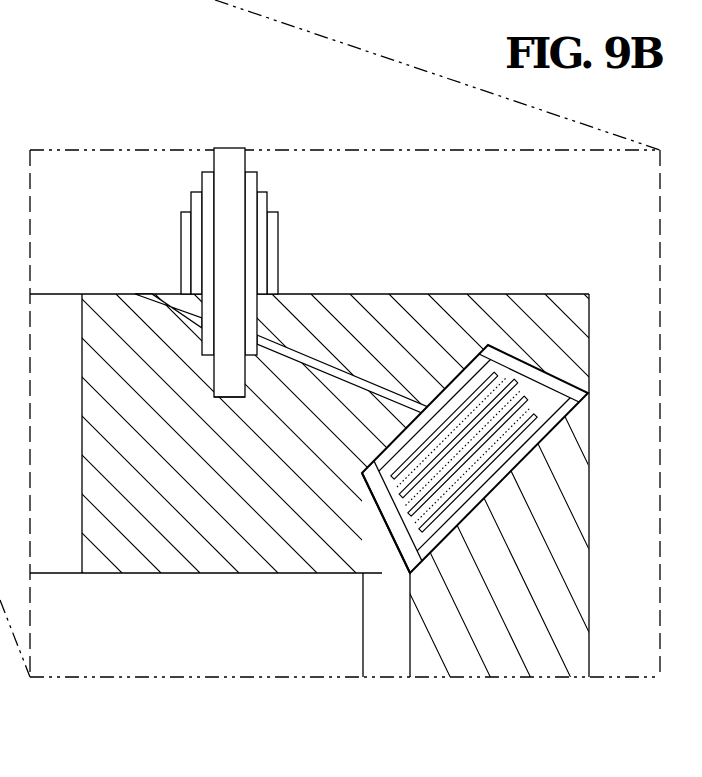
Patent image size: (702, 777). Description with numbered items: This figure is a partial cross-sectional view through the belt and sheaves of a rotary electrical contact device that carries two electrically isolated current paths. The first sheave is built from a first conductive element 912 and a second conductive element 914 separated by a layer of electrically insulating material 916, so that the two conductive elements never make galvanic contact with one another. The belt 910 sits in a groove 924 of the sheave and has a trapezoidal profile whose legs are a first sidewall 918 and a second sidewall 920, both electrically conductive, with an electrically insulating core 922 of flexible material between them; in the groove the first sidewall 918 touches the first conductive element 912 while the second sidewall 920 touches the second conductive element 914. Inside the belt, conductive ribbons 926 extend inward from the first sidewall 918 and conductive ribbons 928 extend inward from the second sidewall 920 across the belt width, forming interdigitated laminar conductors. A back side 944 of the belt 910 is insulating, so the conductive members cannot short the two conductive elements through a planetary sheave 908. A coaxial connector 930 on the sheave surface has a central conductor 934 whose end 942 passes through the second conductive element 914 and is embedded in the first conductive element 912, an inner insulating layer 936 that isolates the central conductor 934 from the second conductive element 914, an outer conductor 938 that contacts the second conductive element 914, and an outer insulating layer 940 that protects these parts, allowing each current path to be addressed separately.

The planetary sheave 908 is at (570, 588).
The belt 910 is at (597, 371).
The first conductive element 912 is at (262, 572).
The second conductive element 914 is at (469, 300).
The layer of electrically insulating material 916 is at (320, 365).
The first sidewall 918 is at (410, 560).
The second sidewall 920 is at (540, 347).
The electrically insulating core 922 is at (527, 370).
The groove 924 is at (392, 426).
The conductive ribbons 926 is at (392, 495).
The conductive ribbons 928 is at (460, 405).
The coaxial connector 930 is at (192, 104).
The central conductor 934 is at (233, 153).
The inner insulating layer 936 is at (203, 173).
The outer conductor 938 is at (195, 207).
The outer insulating layer 940 is at (185, 245).
The end of the central conductor 942 is at (222, 415).
The back side of the belt 944 is at (472, 351).